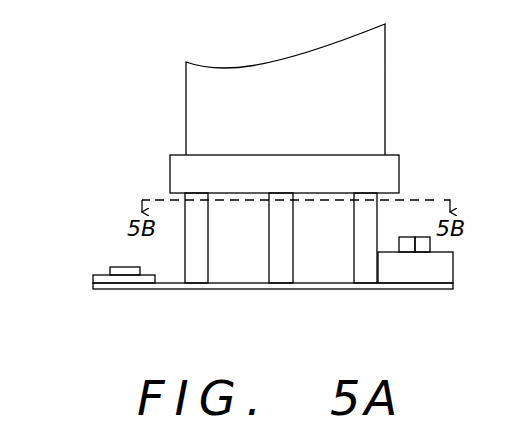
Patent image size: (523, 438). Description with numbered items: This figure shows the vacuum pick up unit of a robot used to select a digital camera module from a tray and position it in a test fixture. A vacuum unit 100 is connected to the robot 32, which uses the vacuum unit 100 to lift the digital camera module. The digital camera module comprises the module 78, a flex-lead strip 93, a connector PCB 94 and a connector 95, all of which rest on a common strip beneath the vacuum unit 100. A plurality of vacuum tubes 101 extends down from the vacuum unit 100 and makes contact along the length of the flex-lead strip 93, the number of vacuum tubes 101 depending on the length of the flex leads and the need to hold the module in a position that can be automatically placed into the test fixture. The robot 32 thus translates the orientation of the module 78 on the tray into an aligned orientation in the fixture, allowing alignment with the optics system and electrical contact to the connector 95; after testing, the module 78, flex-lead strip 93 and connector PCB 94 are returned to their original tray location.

The robot 32 is at (385, 69).
The vacuum unit 100 is at (399, 170).
The vacuum tubes 101 is at (293, 252).
The flex-lead strip 93 is at (226, 289).
The connector PCB 94 is at (93, 280).
The connector 95 is at (123, 267).
The module 78 is at (453, 265).